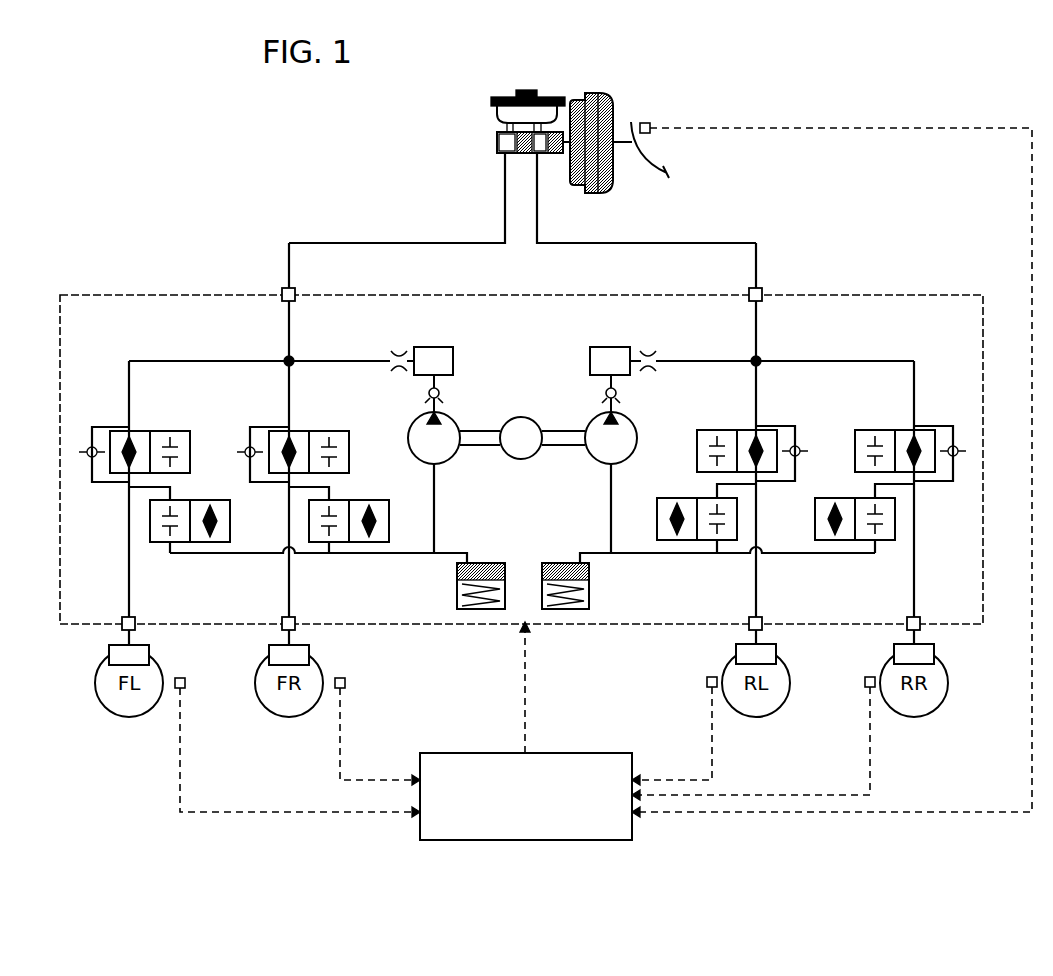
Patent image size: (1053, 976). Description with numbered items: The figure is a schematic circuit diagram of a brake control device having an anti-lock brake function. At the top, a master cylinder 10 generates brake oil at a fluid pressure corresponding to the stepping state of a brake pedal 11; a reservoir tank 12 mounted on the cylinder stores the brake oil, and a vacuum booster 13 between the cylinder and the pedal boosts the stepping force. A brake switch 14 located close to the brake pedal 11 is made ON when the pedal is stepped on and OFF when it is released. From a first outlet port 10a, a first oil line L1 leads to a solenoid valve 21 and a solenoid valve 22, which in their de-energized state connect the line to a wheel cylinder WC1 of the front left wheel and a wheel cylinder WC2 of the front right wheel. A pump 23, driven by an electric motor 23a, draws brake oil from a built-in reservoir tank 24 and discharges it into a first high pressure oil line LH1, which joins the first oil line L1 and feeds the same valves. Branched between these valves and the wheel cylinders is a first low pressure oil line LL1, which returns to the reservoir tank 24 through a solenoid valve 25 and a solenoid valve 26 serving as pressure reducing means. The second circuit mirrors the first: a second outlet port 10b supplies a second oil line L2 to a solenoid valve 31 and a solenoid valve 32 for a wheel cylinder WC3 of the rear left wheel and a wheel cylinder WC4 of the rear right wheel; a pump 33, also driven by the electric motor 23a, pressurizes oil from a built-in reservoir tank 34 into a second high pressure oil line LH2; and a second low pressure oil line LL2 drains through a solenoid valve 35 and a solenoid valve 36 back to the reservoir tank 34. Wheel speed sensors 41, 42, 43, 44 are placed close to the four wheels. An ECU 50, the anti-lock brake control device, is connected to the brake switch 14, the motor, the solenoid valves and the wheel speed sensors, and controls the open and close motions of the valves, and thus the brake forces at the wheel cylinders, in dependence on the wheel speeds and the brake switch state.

The master cylinder 10 is at (497, 138).
The first outlet port 10a is at (503, 160).
The second outlet port 10b is at (538, 157).
The brake pedal 11 is at (657, 158).
The reservoir tank 12 is at (526, 92).
The vacuum booster 13 is at (592, 95).
The brake switch 14 is at (647, 122).
The solenoid valve 21 is at (183, 410).
The solenoid valve 22 is at (312, 430).
The pump 23 is at (407, 445).
The electric motor 23a is at (521, 415).
The built-in reservoir tank 24 is at (480, 562).
The solenoid valve 25 is at (198, 553).
The solenoid valve 26 is at (357, 497).
The solenoid valve 31 is at (731, 428).
The solenoid valve 32 is at (887, 428).
The pump 33 is at (637, 430).
The built-in reservoir tank 34 is at (573, 562).
The solenoid valve 35 is at (690, 496).
The solenoid valve 36 is at (865, 496).
The wheel speed sensor 41 is at (187, 685).
The wheel speed sensor 42 is at (347, 685).
The wheel speed sensor 43 is at (707, 684).
The wheel speed sensor 44 is at (865, 684).
The ECU 50 is at (559, 753).
The first oil line L1 is at (405, 244).
The second oil line L2 is at (580, 244).
The first high pressure oil line LH1 is at (343, 347).
The second high pressure oil line LH2 is at (690, 345).
The first low pressure oil line LL1 is at (340, 556).
The second low pressure oil line LL2 is at (645, 556).
The wheel cylinder WC1 is at (147, 650).
The wheel cylinder WC2 is at (306, 650).
The wheel cylinder WC3 is at (737, 647).
The wheel cylinder WC4 is at (893, 645).